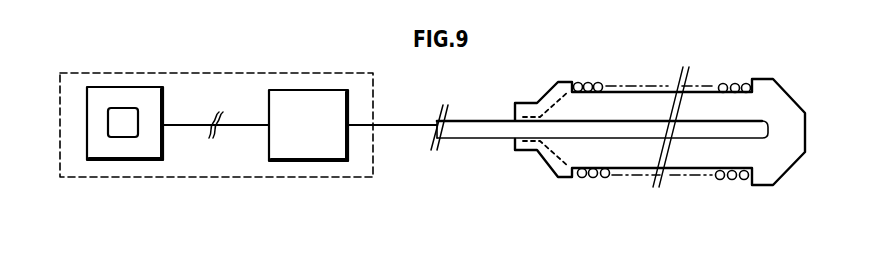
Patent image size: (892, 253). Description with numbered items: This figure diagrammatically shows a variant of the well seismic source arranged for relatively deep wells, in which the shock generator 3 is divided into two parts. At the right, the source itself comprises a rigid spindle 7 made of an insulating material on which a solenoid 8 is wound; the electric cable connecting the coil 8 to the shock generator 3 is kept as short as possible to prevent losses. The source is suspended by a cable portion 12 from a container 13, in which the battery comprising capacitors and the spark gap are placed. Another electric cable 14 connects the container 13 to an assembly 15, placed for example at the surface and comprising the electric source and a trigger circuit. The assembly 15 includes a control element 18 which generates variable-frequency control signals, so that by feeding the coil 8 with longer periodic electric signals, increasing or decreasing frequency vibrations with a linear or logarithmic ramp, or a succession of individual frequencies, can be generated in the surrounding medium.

The shock generator 3 is at (59, 72).
The rigid spindle 7 is at (785, 115).
The solenoid 8 is at (738, 84).
The cable portion 12 is at (428, 125).
The container 13 is at (317, 103).
The electric cable 14 is at (238, 124).
The assembly 15 is at (114, 87).
The control element 18 is at (137, 111).